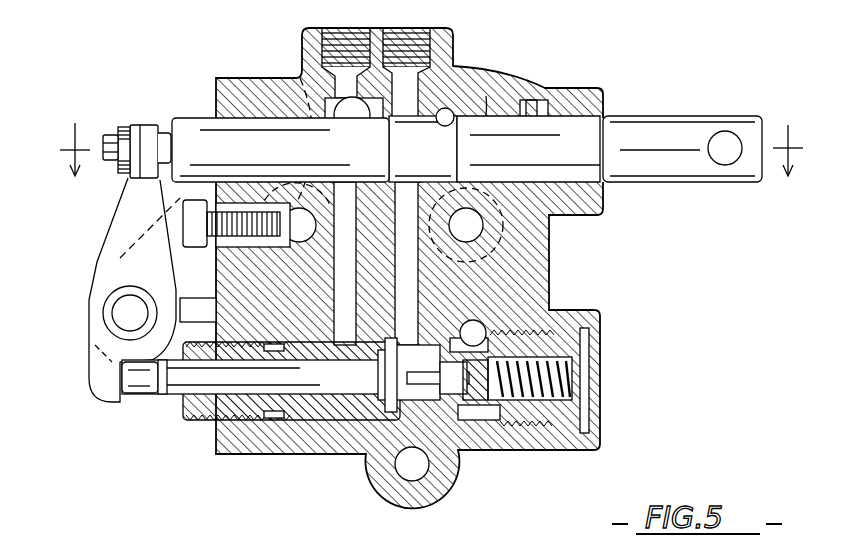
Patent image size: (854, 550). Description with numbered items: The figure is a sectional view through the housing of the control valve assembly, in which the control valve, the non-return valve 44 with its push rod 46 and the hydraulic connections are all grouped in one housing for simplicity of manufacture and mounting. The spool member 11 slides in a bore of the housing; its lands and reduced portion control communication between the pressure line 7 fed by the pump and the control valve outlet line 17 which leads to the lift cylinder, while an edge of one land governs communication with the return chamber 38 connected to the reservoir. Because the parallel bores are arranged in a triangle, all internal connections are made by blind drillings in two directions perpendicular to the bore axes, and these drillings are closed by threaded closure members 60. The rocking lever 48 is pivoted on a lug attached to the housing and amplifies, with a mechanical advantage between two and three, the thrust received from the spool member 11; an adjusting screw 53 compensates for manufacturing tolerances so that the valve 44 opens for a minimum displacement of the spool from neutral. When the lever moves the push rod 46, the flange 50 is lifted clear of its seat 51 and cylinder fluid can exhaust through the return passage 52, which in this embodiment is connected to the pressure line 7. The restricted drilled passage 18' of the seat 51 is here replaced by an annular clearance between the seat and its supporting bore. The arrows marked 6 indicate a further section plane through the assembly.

The pressure line 7 is at (298, 78).
The threaded closure members 60 is at (342, 48).
The return chamber 38 is at (485, 120).
The spool member 11 is at (562, 138).
The control valve outlet line 17 is at (410, 285).
The adjusting screw 53 is at (155, 127).
The rocking lever 48 is at (110, 259).
The return passage 52 is at (336, 340).
The drilled passage 18' is at (262, 416).
The push rod 46 is at (172, 382).
The seat 51 is at (390, 378).
The flange 50 is at (400, 400).
The non-return valve 44 is at (481, 407).
The section line 6- 6 is at (431, 162).